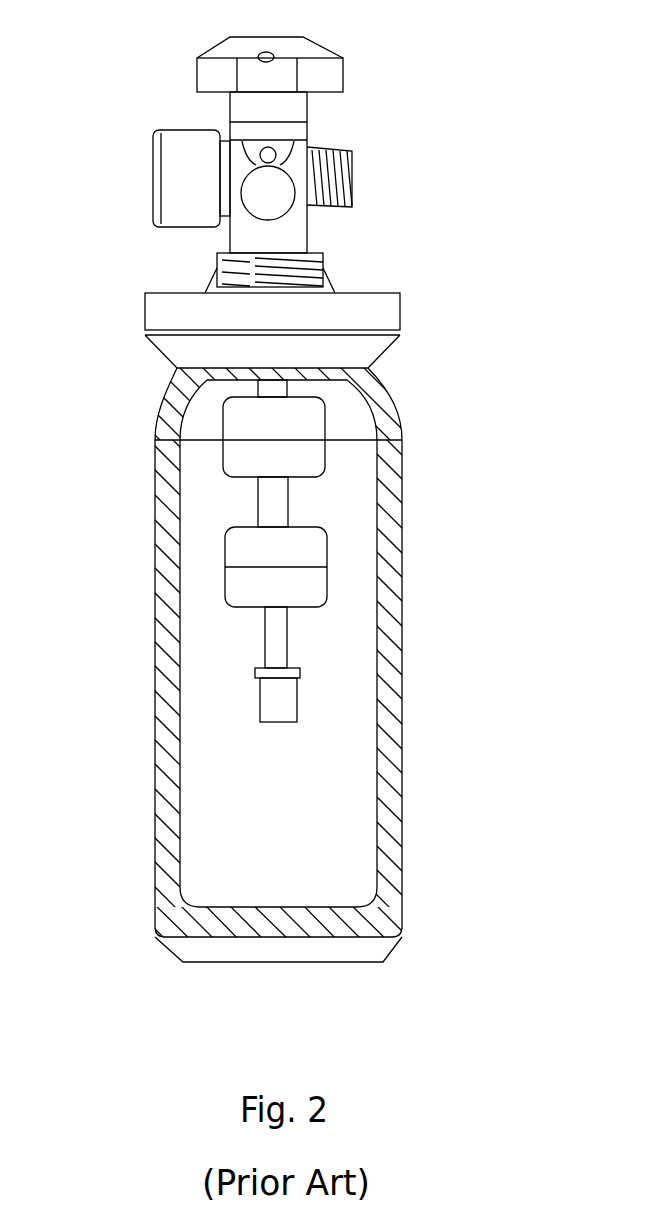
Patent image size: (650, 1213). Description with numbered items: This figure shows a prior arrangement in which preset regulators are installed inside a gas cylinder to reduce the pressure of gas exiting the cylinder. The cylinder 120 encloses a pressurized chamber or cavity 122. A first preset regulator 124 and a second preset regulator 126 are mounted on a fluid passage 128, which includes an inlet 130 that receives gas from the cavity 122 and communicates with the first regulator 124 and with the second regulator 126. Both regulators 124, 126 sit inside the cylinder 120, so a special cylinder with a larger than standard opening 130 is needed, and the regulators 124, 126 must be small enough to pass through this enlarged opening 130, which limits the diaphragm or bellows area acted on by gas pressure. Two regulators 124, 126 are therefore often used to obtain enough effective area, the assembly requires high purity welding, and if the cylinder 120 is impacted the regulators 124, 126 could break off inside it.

The cylinder 120 is at (157, 650).
The pressurized chamber or cavity 122 is at (233, 845).
The preset regulator 124 is at (313, 547).
The second preset regulator 126 is at (303, 420).
The fluid passage 128 is at (347, 387).
The inlet 130 is at (158, 317).